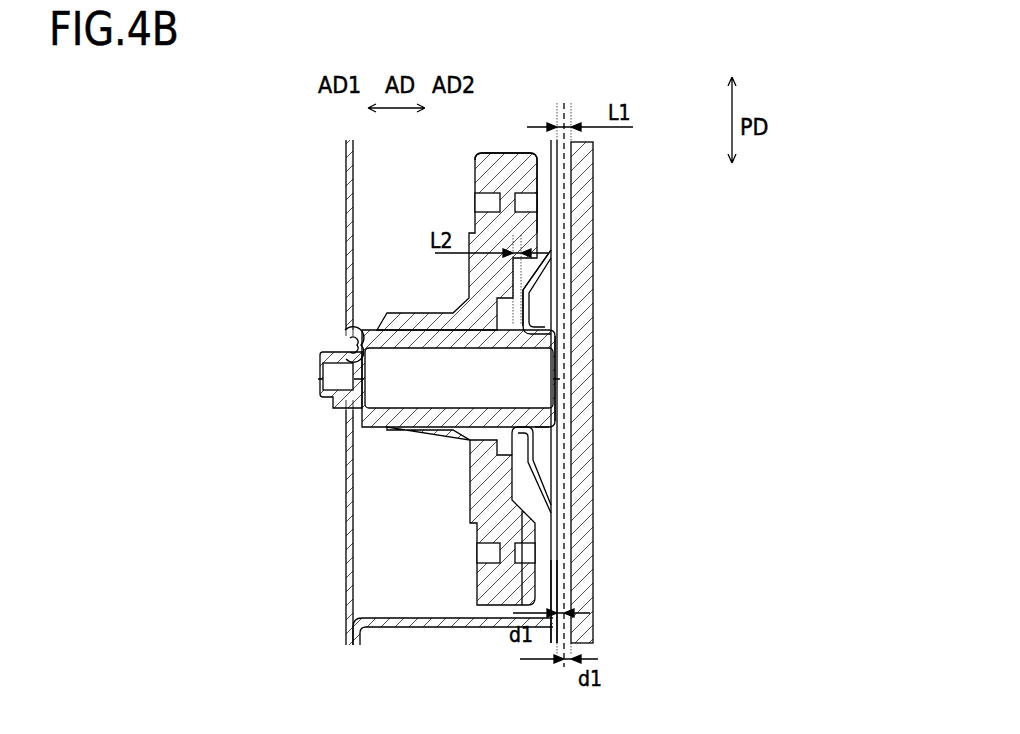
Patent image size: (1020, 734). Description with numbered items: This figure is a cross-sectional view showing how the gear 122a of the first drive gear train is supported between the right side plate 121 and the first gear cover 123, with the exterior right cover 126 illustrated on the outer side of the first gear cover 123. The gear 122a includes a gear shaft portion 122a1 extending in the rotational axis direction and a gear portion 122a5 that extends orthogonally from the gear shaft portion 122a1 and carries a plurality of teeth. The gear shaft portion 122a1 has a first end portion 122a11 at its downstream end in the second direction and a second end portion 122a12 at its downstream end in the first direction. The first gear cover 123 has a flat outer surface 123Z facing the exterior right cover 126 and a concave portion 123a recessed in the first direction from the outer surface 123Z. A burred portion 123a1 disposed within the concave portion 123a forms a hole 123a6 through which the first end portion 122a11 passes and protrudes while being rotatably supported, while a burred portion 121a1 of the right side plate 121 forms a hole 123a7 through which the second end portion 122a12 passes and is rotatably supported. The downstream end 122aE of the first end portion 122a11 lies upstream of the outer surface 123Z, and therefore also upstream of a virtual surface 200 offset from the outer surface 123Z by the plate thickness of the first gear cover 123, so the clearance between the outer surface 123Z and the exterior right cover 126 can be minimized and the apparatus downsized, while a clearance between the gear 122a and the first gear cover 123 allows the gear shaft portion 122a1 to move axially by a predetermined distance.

The right side plate 121 is at (348, 502).
The burred portion 121a1 is at (343, 344).
The gear 122a is at (505, 177).
The gear shaft portion 122a1 is at (428, 420).
The gear portion 122a5 is at (497, 162).
The first end portion 122a11 is at (540, 417).
The second end portion 122a12 is at (337, 398).
The downstream end 122aE is at (545, 332).
The first gear cover 123 is at (415, 618).
The concave portion 123a is at (528, 462).
The burred portion 123a1 is at (530, 323).
The hole 123a6 is at (527, 291).
The hole 123a7 is at (351, 332).
The outer surface 123Z is at (560, 583).
The exterior right cover 126 is at (583, 555).
The virtual surface 200 is at (597, 196).